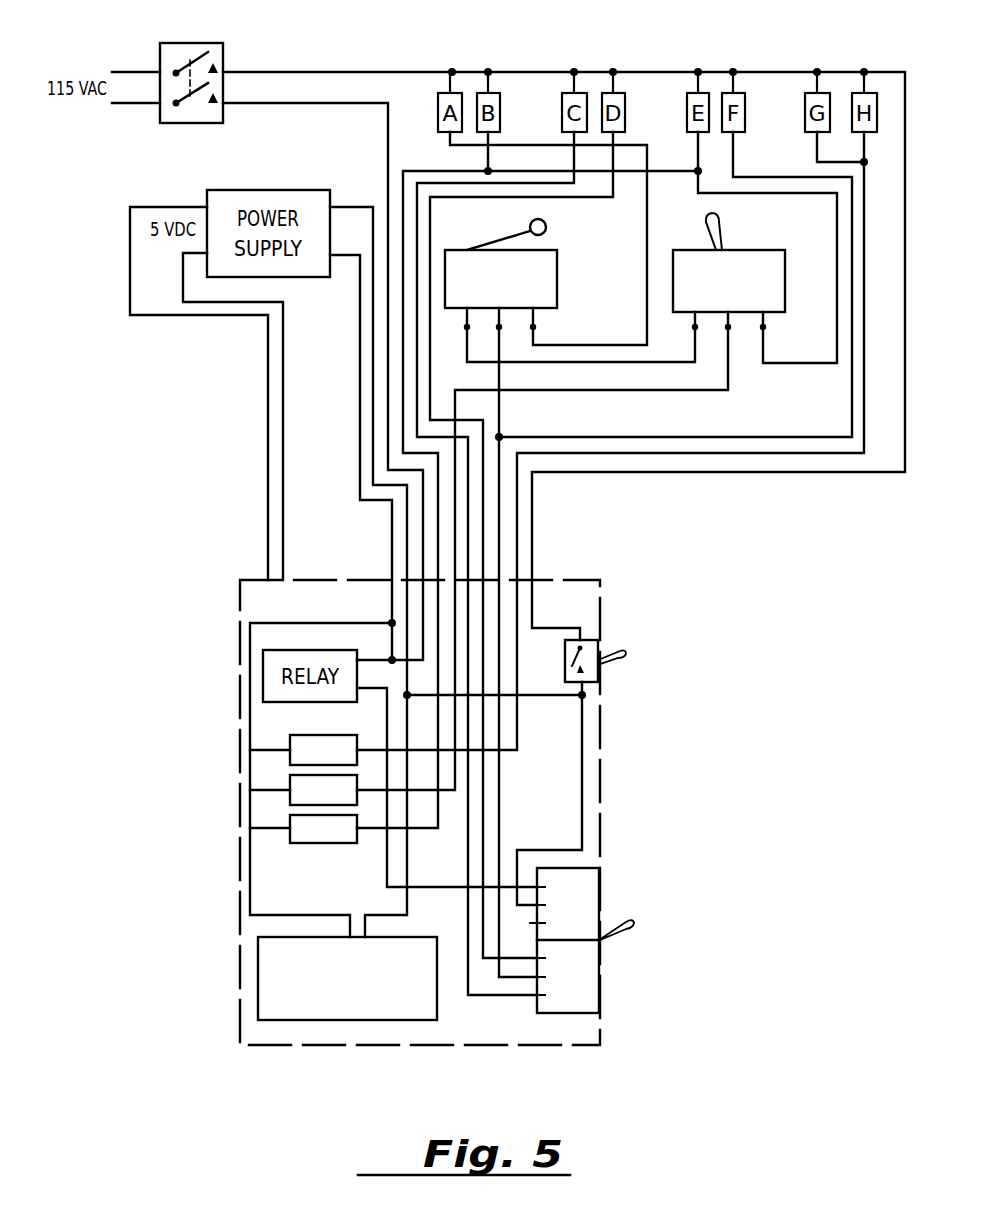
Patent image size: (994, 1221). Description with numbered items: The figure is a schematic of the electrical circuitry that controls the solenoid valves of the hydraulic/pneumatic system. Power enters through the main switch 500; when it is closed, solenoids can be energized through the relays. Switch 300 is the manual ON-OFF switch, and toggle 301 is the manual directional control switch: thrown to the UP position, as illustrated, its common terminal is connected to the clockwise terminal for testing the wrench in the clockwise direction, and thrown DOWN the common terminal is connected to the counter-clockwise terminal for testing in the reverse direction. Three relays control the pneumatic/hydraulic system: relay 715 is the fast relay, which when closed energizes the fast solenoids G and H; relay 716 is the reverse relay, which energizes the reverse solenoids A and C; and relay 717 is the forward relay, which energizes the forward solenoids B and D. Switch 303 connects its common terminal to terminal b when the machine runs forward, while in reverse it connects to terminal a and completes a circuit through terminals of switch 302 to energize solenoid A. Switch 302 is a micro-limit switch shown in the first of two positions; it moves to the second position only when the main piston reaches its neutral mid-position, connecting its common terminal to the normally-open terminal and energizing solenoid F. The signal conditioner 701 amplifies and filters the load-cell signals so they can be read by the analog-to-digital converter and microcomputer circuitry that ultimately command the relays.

The main switch 500 is at (215, 60).
The micro-limit switch 302 is at (550, 275).
The switch 303 is at (757, 260).
The ON-OFF switch 300 is at (602, 645).
The toggle 301 is at (600, 915).
The fast relay 715 is at (333, 746).
The reverse relay 716 is at (333, 793).
The forward relay 717 is at (328, 835).
The signal conditioner 701 is at (275, 977).